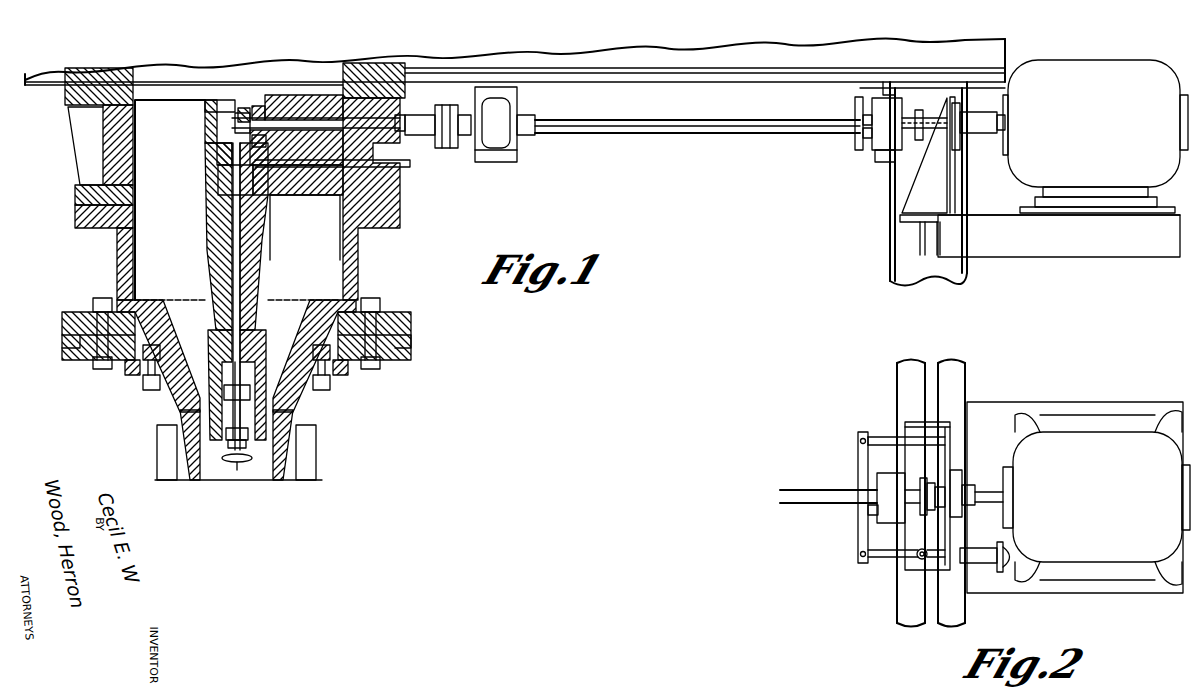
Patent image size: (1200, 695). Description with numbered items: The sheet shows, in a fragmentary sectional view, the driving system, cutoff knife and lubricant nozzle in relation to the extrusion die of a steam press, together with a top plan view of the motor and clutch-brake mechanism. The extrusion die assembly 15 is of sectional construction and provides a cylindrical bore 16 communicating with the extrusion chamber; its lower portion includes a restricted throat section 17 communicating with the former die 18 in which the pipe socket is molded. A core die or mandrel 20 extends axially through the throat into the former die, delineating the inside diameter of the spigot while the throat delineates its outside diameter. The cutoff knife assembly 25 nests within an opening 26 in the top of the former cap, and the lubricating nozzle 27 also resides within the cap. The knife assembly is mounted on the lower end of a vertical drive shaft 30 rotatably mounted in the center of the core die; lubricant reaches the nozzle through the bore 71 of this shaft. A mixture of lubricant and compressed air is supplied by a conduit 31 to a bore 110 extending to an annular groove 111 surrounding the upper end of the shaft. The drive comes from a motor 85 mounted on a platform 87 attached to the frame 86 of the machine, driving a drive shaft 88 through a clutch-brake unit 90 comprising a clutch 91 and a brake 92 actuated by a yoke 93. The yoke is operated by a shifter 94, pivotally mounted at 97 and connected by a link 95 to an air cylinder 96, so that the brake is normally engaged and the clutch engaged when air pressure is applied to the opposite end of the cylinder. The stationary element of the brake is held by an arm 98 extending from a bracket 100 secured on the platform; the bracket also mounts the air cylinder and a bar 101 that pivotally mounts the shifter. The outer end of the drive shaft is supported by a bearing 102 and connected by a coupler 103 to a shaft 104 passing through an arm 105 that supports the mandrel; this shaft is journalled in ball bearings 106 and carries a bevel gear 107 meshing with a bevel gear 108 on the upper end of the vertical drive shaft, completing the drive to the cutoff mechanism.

In FIG. 1, the extrusion die assembly 15 is at (362, 248).
In FIG. 1, the cylindrical bore 16 is at (152, 272).
In FIG. 1, the restricted throat section 17 is at (175, 400).
In FIG. 1, the former die 18 is at (167, 465).
In FIG. 1, the core die or mandrel 20 is at (258, 276).
In FIG. 1, the cutoff knife assembly 25 is at (228, 440).
In FIG. 1, the opening 26 is at (256, 400).
In FIG. 1, the lubricating nozzle 27 is at (250, 460).
In FIG. 1, the vertical drive shaft 30 is at (235, 250).
In FIG. 1, the conduit 31 is at (410, 167).
In FIG. 1, the bore 71 is at (213, 196).
In FIG. 1, the motor 85 is at (1130, 60).
In FIG. 2, the motor 85 is at (1130, 450).
In FIG. 1, the frame 86 is at (785, 58).
In FIG. 1, the platform 87 is at (1130, 240).
In FIG. 2, the platform 87 is at (1030, 415).
In FIG. 1, the drive shaft 88 is at (715, 128).
In FIG. 2, the drive shaft 88 is at (803, 503).
In FIG. 1, the clutch-brake unit 90 is at (876, 155).
In FIG. 2, the clutch-brake unit 90 is at (878, 515).
In FIG. 1, the clutch 91 is at (893, 108).
In FIG. 2, the clutch 91 is at (885, 495).
In FIG. 1, the brake 92 is at (915, 140).
In FIG. 2, the brake 92 is at (912, 505).
In FIG. 1, the yoke 93 is at (855, 110).
In FIG. 2, the yoke 93 is at (860, 480).
In FIG. 1, the shifter 94 is at (855, 143).
In FIG. 2, the shifter 94 is at (860, 540).
In FIG. 1, the link 95 is at (884, 162).
In FIG. 2, the link 95 is at (888, 560).
In FIG. 1, the air cylinder 96 is at (983, 127).
In FIG. 2, the air cylinder 96 is at (990, 563).
In FIG. 2, the pivot 97 is at (860, 440).
In FIG. 2, the arm 98 is at (940, 490).
In FIG. 1, the bracket 100 is at (953, 190).
In FIG. 2, the bracket 100 is at (952, 456).
In FIG. 2, the bar 101 is at (882, 437).
In FIG. 1, the bearing 102 is at (505, 115).
In FIG. 1, the coupler 103 is at (448, 105).
In FIG. 1, the shaft 104 is at (320, 125).
In FIG. 1, the arm 105 is at (290, 112).
In FIG. 1, the ball bearings 106 is at (262, 118).
In FIG. 1, the bevel gear 107 is at (243, 108).
In FIG. 1, the bevel gear 108 is at (213, 125).
In FIG. 1, the bore 110 is at (303, 193).
In FIG. 1, the annular groove 111 is at (213, 178).